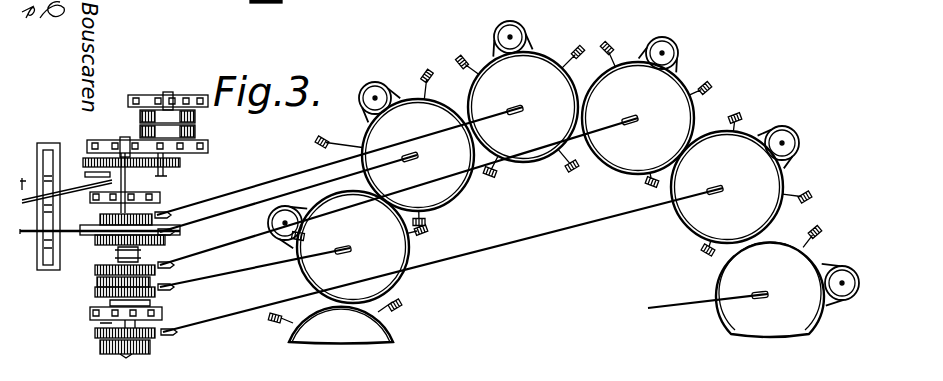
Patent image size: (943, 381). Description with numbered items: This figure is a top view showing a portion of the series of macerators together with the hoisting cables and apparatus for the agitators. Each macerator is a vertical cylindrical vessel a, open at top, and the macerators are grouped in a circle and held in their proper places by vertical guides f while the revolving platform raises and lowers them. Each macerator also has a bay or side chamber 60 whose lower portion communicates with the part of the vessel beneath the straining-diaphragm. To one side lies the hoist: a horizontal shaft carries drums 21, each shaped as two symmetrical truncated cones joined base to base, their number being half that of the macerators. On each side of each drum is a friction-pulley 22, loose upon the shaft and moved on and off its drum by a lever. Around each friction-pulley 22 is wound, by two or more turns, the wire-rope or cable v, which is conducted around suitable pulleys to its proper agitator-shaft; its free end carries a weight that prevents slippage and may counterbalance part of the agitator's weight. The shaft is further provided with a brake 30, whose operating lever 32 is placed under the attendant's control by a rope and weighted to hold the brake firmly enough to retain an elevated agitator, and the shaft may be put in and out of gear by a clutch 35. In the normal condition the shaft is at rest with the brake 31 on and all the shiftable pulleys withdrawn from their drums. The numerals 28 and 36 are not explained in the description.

The drum 21 is at (108, 318).
The friction-pulley 22 is at (114, 300).
The shaft end 28 is at (552, 194).
The brake 30 is at (139, 236).
The brake 31 is at (109, 217).
The operating lever 32 is at (97, 239).
The clutch 35 is at (131, 183).
The frame bar 36 is at (168, 94).
The bay or side chamber 60 is at (563, 163).
The vertical cylindrical vessel a is at (556, 198).
The vertical guide f is at (536, 185).
The wire-rope or cable v is at (461, 221).